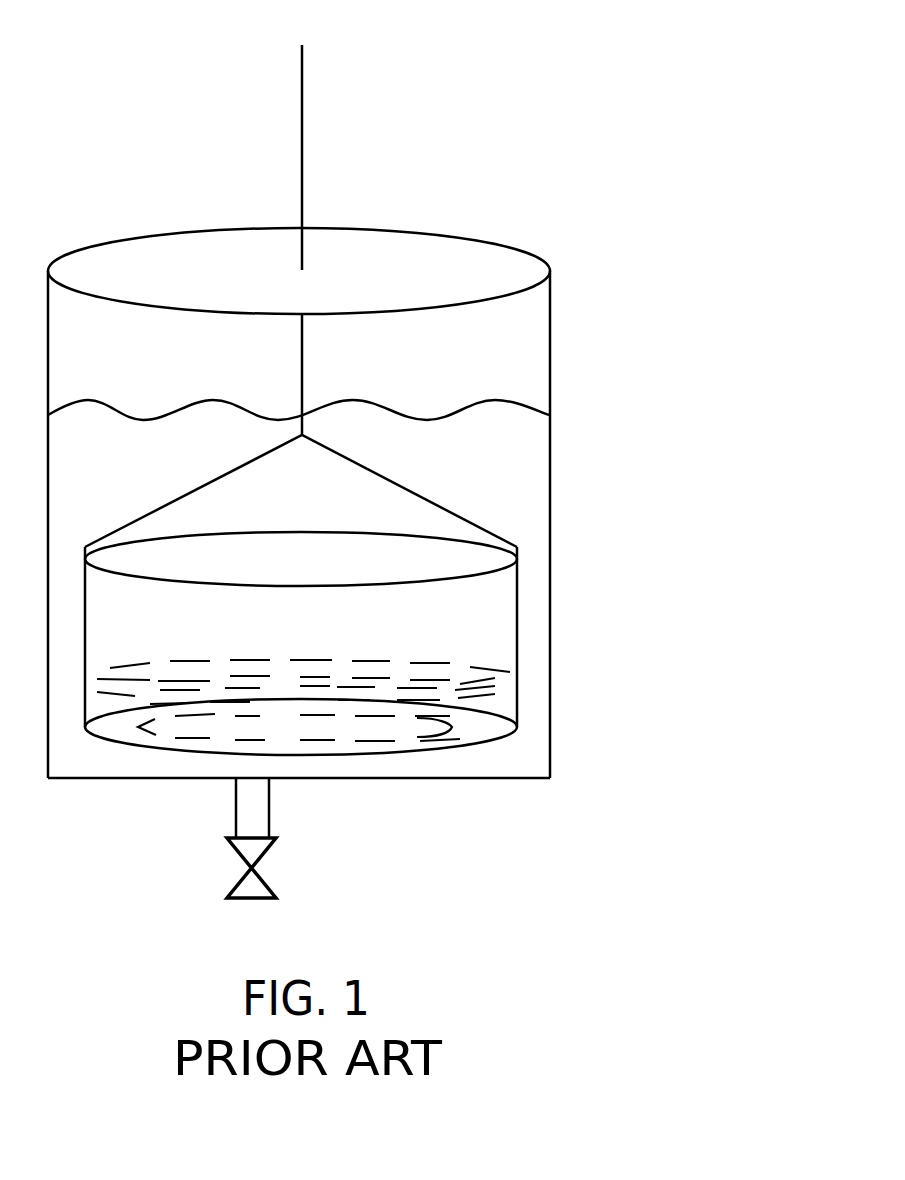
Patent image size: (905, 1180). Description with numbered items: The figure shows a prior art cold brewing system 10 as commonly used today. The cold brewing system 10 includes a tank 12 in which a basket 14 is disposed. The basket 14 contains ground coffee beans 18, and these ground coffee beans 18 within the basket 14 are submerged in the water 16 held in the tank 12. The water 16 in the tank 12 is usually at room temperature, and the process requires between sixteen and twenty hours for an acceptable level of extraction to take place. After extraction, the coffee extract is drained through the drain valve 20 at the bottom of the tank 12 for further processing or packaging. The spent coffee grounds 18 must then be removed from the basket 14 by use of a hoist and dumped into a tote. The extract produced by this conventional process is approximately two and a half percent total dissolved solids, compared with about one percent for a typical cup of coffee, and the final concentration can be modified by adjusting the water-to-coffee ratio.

The cold brewing system 10 is at (483, 120).
The tank 12 is at (551, 297).
The basket 14 is at (517, 660).
The water 16 is at (527, 462).
The ground coffee beans 18 is at (214, 628).
The drain valve 20 is at (256, 872).